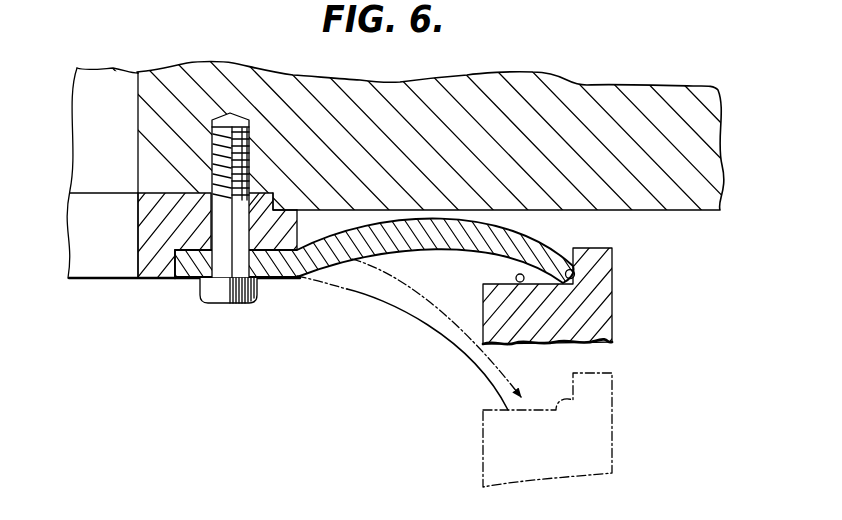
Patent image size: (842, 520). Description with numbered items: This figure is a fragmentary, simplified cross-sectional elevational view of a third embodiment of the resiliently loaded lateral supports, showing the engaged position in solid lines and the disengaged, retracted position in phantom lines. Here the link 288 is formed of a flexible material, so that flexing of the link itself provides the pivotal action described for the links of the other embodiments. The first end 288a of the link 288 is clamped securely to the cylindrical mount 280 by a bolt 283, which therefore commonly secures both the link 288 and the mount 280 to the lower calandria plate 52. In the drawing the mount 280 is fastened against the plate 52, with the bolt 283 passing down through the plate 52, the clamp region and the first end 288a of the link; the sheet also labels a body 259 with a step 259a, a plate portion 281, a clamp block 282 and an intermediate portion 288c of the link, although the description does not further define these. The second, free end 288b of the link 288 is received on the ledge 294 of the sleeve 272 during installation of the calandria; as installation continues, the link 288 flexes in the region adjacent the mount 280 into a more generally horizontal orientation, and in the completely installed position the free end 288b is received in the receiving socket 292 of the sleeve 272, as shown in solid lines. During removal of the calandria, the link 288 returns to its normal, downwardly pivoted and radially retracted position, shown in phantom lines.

The lower calandria plate 52 is at (470, 128).
The body 259 is at (133, 92).
The shoulder 259a is at (274, 193).
The sleeve 272 is at (612, 417).
The cylindrical mount 280 is at (158, 283).
The plate 281 is at (138, 240).
The clamp block 282 is at (175, 199).
The bolt 283 is at (249, 132).
The link 288 is at (434, 250).
The first end of the link 288a is at (271, 280).
The free end of the link 288b is at (573, 262).
The intermediate portion of spring strip 288c is at (483, 224).
The receiving socket 292 is at (574, 271).
The ledge 294 is at (519, 282).